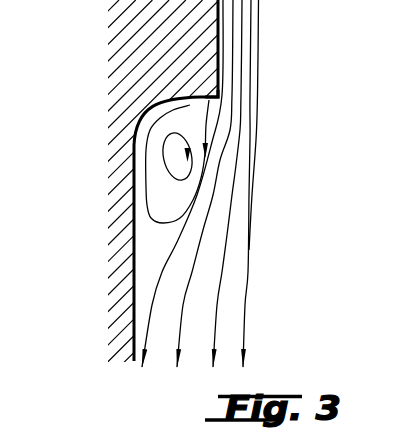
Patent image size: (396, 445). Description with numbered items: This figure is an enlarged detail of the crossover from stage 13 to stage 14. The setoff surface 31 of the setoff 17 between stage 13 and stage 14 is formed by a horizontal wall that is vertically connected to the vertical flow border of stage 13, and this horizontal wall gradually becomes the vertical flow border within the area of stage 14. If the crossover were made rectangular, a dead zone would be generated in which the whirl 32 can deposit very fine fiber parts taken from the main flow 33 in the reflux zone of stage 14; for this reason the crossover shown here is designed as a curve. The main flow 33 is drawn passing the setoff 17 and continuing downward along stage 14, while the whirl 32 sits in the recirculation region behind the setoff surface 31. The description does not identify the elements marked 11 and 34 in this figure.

The wall 11 is at (92, 59).
The stage 13 is at (298, 43).
The stage 14 is at (291, 279).
The setoff 17 is at (217, 103).
The setoff surface 31 is at (203, 107).
The whirl 32 is at (168, 163).
The main flow 33 is at (232, 170).
The recirculation zone 34 is at (150, 120).